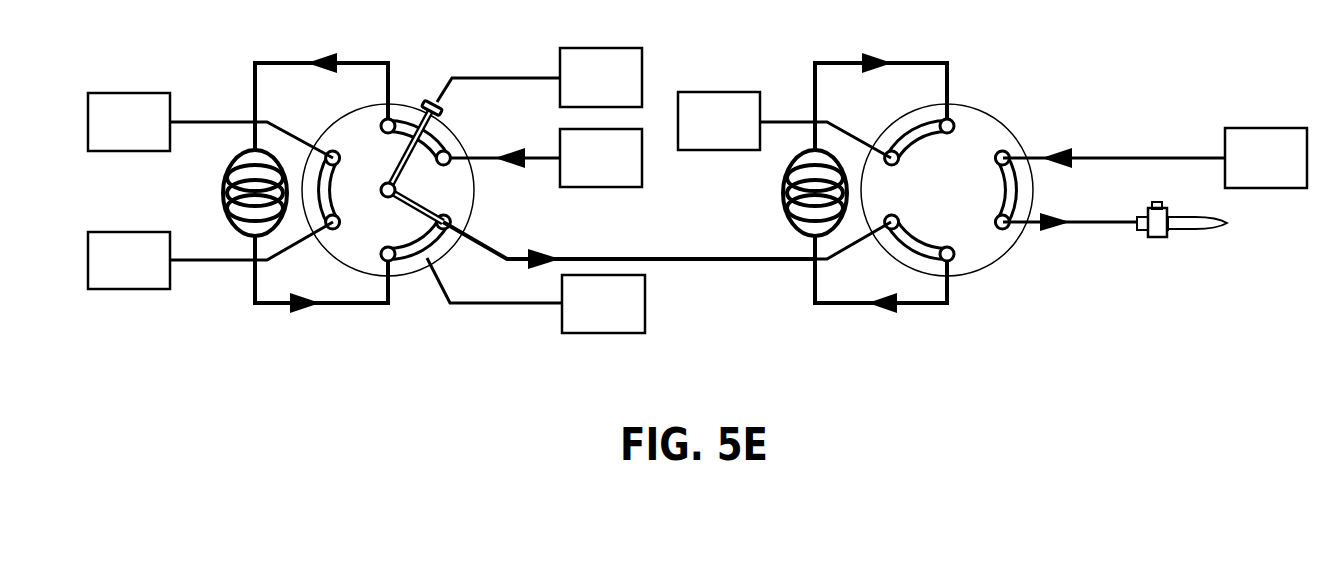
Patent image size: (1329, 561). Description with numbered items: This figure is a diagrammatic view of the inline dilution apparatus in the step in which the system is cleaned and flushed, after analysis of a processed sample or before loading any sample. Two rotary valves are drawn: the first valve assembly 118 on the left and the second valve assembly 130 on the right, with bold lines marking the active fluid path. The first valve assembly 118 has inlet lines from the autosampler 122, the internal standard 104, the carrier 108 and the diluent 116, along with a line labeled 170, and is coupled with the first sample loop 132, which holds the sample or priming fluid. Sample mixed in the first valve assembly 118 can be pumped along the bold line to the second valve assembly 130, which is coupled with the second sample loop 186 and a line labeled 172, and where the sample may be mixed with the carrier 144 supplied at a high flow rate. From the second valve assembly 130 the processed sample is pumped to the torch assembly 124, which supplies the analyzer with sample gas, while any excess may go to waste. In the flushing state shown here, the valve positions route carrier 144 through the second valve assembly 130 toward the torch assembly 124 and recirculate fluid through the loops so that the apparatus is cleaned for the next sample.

The internal standard 104 is at (622, 91).
The carrier 108 is at (622, 171).
The diluent 116 is at (624, 317).
The first valve assembly 118 is at (397, 207).
The autosampler 122 is at (150, 135).
The torch assembly 124 is at (1157, 237).
The second valve assembly 130 is at (993, 262).
The first sample loop 132 is at (222, 196).
The carrier 144 is at (1287, 171).
The pump outlet 170 is at (150, 273).
The second pump 172 is at (740, 134).
The second sample loop 186 is at (782, 196).